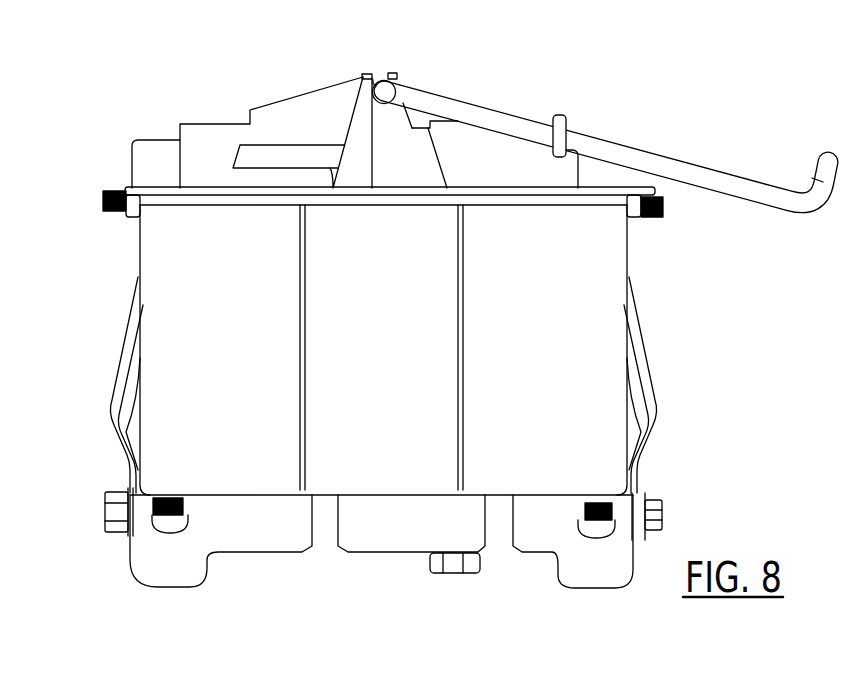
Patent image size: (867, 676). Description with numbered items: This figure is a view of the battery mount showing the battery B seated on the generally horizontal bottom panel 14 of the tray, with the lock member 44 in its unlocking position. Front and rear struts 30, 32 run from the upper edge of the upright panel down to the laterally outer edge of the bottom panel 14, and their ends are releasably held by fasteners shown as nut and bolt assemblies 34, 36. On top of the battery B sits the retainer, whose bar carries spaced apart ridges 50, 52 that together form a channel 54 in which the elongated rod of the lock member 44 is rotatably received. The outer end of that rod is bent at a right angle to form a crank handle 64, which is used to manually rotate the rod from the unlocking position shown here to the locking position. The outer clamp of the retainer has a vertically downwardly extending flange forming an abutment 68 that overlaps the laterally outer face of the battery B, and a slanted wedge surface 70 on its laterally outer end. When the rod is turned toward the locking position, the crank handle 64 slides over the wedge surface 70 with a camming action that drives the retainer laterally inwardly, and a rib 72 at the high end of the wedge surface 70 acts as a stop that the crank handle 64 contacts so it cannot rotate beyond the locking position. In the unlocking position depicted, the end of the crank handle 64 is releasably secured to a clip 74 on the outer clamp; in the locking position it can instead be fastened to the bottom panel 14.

The bottom panel 14 is at (233, 538).
The front strut 30 is at (118, 397).
The rear strut 32 is at (652, 377).
The nut and bolt assembly 34 is at (110, 494).
The nut and bolt assembly 36 is at (650, 494).
The lock member 44 is at (601, 114).
The ridge 50 is at (365, 75).
The ridge 52 is at (398, 78).
The channel 54 is at (376, 74).
The crank handle 64 is at (670, 167).
The abutment 68 is at (218, 172).
The wedge surface 70 is at (402, 160).
The rib 72 is at (347, 170).
The clip 74 is at (566, 116).
The battery B is at (381, 372).